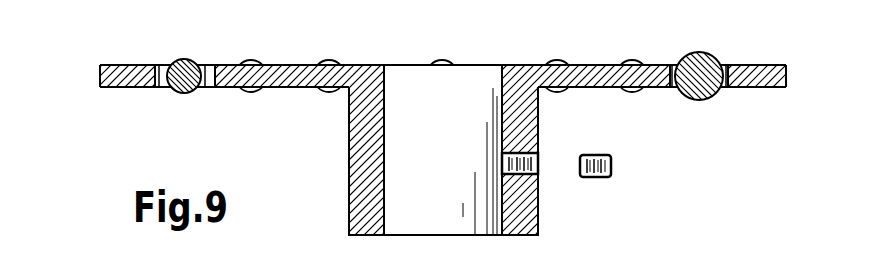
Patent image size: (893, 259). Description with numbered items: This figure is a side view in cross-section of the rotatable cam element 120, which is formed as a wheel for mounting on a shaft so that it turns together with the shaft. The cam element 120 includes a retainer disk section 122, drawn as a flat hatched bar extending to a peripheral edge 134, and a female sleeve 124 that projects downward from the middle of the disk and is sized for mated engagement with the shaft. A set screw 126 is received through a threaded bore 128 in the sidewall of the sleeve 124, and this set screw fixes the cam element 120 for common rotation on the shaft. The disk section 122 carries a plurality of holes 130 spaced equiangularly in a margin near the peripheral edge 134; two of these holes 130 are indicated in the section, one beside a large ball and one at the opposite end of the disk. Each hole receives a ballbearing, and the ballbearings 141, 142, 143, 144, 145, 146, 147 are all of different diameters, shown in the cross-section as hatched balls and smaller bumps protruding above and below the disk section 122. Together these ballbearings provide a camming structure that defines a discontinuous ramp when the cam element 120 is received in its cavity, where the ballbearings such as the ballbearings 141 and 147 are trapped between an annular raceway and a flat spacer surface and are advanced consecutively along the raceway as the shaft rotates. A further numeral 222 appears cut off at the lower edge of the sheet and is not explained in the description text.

The rotatable cam element 120 is at (778, 53).
The retainer disk section 122 is at (588, 88).
The female sleeve 124 is at (350, 193).
The set screw 126 is at (605, 178).
The threaded bore 128 is at (540, 165).
The holes 130 is at (210, 100).
The peripheral edge 134 is at (100, 70).
The ballbearing 141 is at (181, 60).
The ballbearing 142 is at (253, 60).
The ballbearing 143 is at (330, 61).
The ballbearing 144 is at (443, 55).
The ballbearing 145 is at (559, 60).
The ballbearing 146 is at (634, 60).
The ballbearing 147 is at (701, 100).
The reference element (cut off) 222 is at (696, 250).